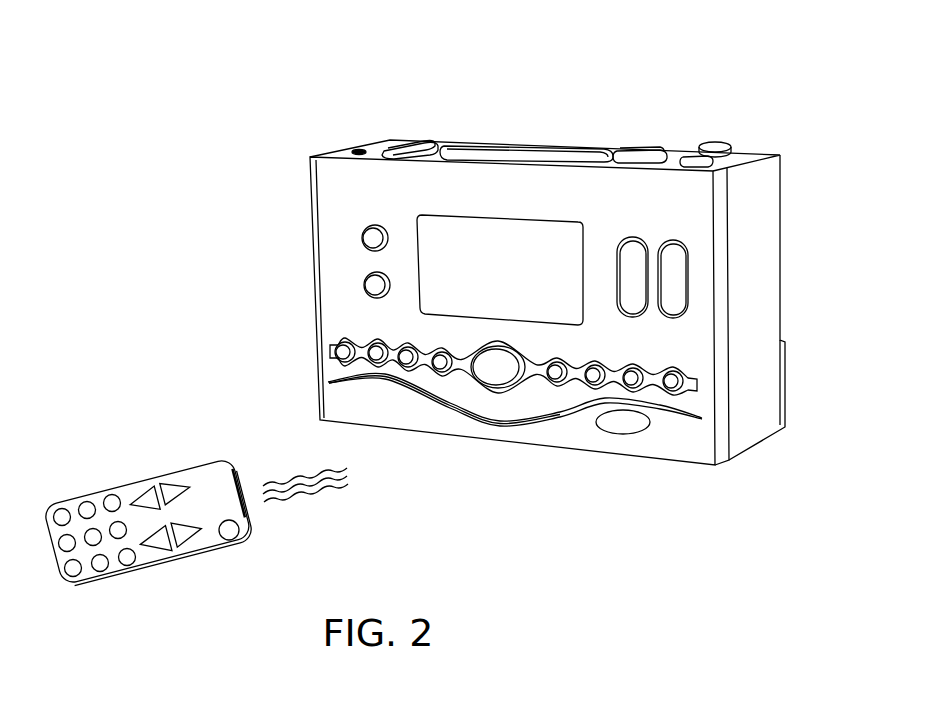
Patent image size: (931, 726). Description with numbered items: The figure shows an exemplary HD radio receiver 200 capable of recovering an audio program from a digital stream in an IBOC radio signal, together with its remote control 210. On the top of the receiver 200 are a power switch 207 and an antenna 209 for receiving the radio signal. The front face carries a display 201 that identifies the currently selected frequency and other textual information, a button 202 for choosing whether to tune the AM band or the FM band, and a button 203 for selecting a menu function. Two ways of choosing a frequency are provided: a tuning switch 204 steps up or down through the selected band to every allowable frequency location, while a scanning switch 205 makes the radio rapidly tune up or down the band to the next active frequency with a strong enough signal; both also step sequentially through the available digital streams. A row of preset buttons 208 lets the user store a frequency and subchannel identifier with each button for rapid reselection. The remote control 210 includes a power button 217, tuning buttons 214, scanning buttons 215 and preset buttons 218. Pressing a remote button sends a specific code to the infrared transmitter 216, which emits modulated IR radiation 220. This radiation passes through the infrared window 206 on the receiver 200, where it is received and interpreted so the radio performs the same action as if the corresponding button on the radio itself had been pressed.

The radio receiver 200 is at (332, 212).
The display 201 is at (452, 242).
The button 202 is at (362, 240).
The button 203 is at (370, 290).
The tuning switch 204 is at (633, 259).
The scanning switch 205 is at (672, 280).
The infrared window 206 is at (631, 428).
The power switch 207 is at (418, 147).
The preset buttons 208 is at (673, 387).
The antenna 209 is at (717, 148).
The remote control 210 is at (207, 475).
The tuning buttons 214 is at (170, 492).
The scanning buttons 215 is at (182, 532).
The infrared transmitter 216 is at (244, 493).
The power button 217 is at (231, 538).
The preset buttons 218 is at (125, 550).
The modulated IR radiation 220 is at (309, 491).